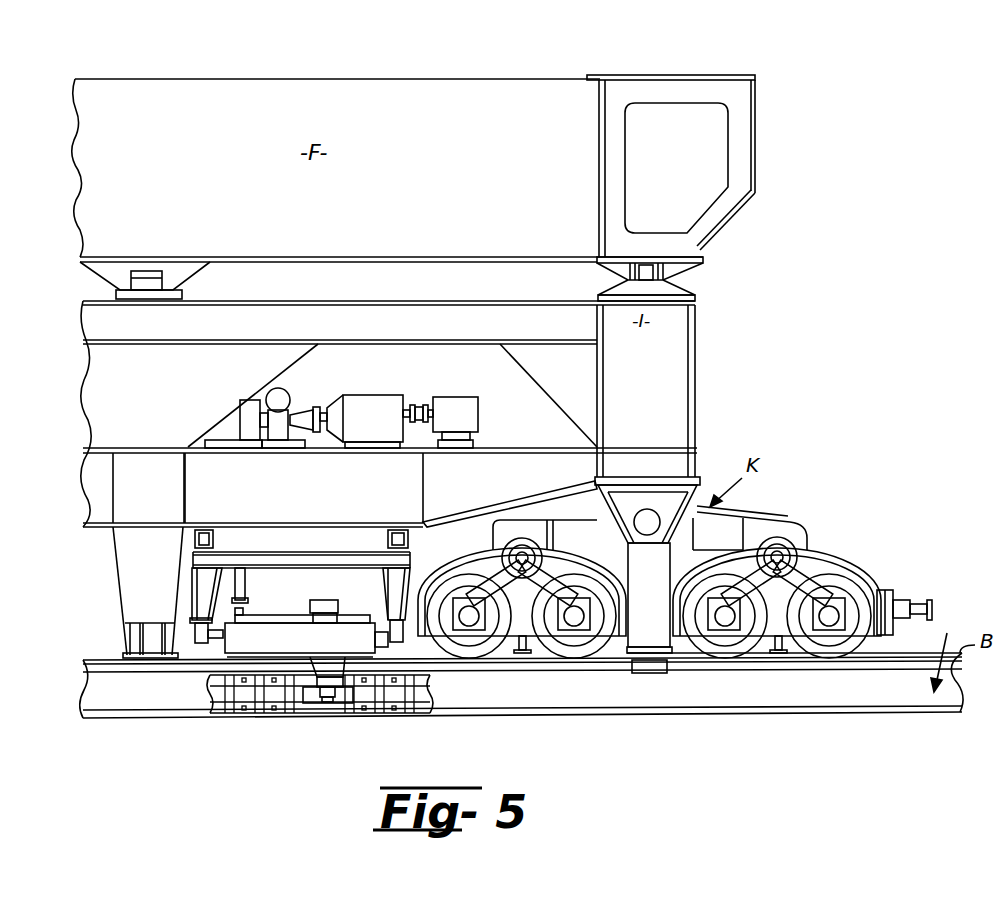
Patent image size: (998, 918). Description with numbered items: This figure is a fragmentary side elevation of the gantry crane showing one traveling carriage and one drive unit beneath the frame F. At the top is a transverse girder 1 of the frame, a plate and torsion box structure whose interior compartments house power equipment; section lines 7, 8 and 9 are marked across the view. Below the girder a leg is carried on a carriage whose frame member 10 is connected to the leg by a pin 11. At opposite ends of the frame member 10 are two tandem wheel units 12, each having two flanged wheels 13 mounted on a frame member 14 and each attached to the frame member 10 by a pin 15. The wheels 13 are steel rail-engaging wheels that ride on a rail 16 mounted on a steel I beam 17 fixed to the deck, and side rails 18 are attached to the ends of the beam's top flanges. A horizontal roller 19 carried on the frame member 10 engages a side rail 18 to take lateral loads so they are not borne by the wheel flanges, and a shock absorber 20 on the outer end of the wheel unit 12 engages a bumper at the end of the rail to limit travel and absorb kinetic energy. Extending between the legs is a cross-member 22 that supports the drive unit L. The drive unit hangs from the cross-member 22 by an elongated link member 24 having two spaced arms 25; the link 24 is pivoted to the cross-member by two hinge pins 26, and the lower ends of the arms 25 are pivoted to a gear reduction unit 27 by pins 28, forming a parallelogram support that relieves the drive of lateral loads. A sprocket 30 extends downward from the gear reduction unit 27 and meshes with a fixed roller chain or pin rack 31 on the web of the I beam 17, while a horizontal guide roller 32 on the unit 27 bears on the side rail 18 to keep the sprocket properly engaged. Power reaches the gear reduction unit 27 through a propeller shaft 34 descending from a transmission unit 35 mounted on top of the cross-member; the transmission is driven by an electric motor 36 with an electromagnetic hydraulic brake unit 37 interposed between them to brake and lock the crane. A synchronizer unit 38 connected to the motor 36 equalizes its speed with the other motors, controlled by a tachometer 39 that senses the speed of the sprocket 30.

The transverse girder 1 is at (548, 80).
The section line 7 is at (323, 556).
The section line 8 is at (410, 556).
The section line 9 is at (645, 556).
The frame member 10 is at (827, 555).
The pin 11 is at (663, 512).
The tandem wheel unit 12 is at (447, 580).
The flanged wheel 13 is at (537, 655).
The frame member 14 is at (433, 556).
The pin 15 is at (513, 555).
The rail 16 is at (933, 650).
The steel I beam 17 is at (885, 662).
The side rail 18 is at (910, 668).
The horizontal roller 19 is at (637, 672).
The shock absorber 20 is at (913, 597).
The cross-member 22 is at (513, 447).
The link member 24 is at (280, 570).
The arm 25 is at (190, 595).
The hinge pin 26 is at (216, 541).
The gear reduction unit 27 is at (245, 652).
The pin 28 is at (217, 640).
The sprocket 30 is at (313, 703).
The roller chain or pin rack 31 is at (223, 697).
The horizontal guide roller 32 is at (333, 673).
The propeller shaft 34 is at (245, 590).
The transmission unit 35 is at (243, 433).
The electric motor 36 is at (368, 423).
The electromagnetic hydraulic brake unit 37 is at (303, 433).
The synchronizer unit 38 is at (473, 397).
The tachometer 39 is at (337, 585).